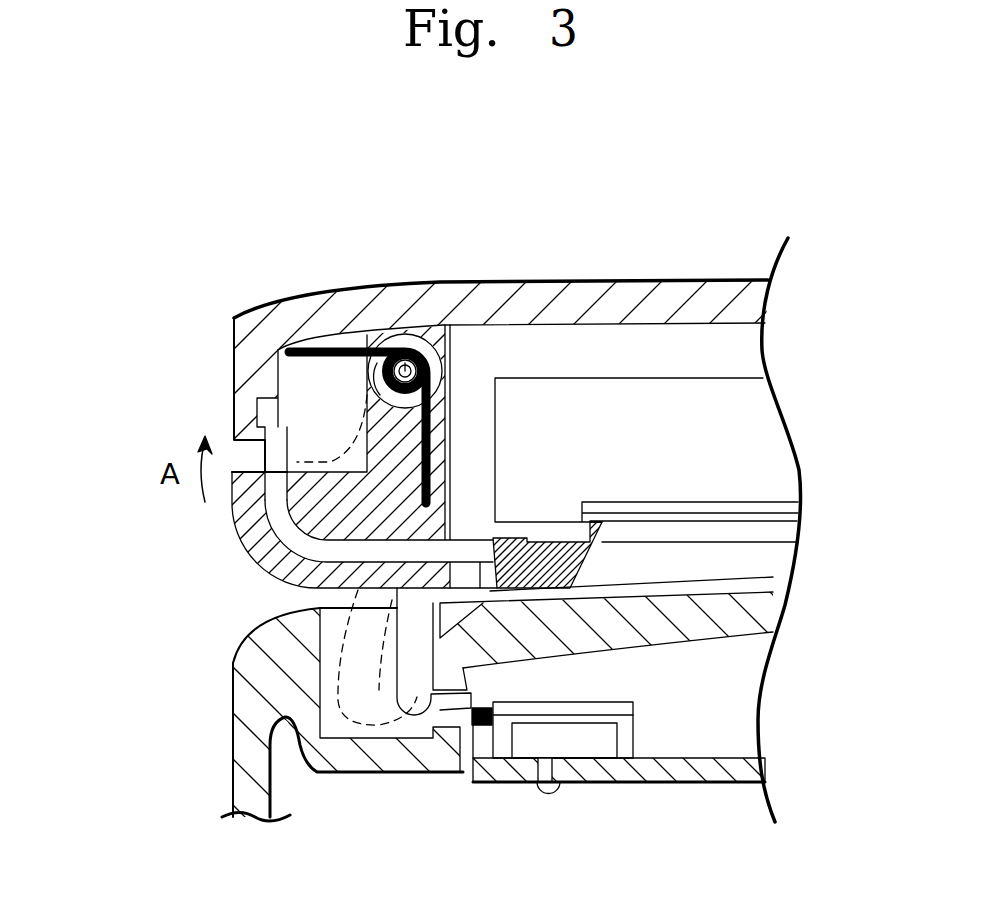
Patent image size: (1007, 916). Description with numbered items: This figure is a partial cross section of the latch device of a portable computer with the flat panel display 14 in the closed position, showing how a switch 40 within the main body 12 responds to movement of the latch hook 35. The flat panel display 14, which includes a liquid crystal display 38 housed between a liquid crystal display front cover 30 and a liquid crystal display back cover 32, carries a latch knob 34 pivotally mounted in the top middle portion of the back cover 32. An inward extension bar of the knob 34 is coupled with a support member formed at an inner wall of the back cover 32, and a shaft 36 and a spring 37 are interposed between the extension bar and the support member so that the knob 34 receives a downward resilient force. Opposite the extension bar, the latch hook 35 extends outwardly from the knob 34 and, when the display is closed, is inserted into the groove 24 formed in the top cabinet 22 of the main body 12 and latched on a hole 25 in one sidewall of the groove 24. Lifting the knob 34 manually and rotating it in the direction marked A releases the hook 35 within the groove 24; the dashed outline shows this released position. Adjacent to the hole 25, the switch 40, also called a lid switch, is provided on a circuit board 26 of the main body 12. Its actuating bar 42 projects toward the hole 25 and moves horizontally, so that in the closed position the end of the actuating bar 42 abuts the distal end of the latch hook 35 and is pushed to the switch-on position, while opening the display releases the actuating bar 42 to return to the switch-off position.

The main body 12 is at (183, 693).
The flat panel display 14 is at (267, 279).
The top cabinet 22 is at (233, 753).
The groove 24 is at (335, 747).
The hole 25 is at (457, 690).
The circuit board 26 is at (692, 784).
The liquid crystal display front cover 30 is at (776, 553).
The liquid crystal display back cover 32 is at (585, 292).
The latch knob 34 is at (243, 531).
The latch hook 35 is at (420, 717).
The shaft 36 is at (407, 360).
The spring 37 is at (340, 343).
The liquid crystal display 38 is at (758, 413).
The switch 40 is at (633, 726).
The actuating bar 42 is at (467, 727).